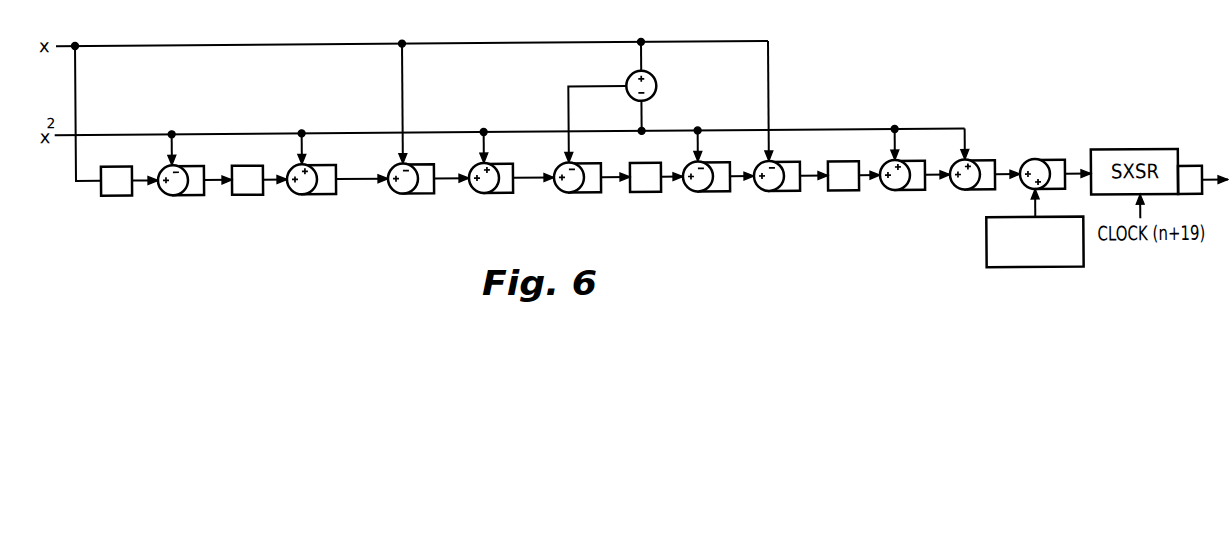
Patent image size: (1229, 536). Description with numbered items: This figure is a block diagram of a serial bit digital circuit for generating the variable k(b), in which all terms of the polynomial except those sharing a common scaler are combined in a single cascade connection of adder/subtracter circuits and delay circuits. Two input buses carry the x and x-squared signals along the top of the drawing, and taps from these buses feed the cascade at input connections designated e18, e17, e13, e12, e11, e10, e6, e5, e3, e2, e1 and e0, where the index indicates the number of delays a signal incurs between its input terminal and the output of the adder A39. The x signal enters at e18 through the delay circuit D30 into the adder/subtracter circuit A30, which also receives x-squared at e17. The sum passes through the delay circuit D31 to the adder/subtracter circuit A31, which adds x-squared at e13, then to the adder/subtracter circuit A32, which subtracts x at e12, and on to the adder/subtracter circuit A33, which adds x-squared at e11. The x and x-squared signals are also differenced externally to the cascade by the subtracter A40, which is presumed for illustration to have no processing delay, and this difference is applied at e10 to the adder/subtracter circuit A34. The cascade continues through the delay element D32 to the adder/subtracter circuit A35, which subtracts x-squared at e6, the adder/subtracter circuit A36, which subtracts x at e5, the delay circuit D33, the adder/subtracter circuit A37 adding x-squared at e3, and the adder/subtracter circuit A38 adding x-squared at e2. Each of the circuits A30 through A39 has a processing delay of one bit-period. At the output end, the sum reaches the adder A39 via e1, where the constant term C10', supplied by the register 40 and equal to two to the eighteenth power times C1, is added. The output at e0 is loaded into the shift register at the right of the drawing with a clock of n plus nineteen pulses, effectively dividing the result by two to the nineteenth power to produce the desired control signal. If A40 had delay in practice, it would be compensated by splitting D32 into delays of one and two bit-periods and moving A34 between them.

The delay circuit D30 is at (121, 196).
The adder/subtracter circuit A30 is at (184, 192).
The delay circuit D31 is at (252, 196).
The adder/subtracter circuit A31 is at (313, 192).
The adder/subtracter circuit A32 is at (414, 192).
The adder/subtracter circuit A33 is at (495, 192).
The adder/subtracter circuit A34 is at (580, 192).
The delay element D32 is at (650, 196).
The adder/subtracter circuit A35 is at (709, 192).
The adder/subtracter circuit A36 is at (780, 192).
The delay circuit D33 is at (848, 196).
The adder/subtracter circuit A37 is at (906, 192).
The adder/subtracter circuit A38 is at (976, 192).
The adder A39 is at (1045, 169).
The subtracter A40 is at (657, 92).
The register 40 is at (986, 258).
The input connection e18 is at (76, 162).
The input connection e17 is at (174, 152).
The input connection e13 is at (304, 152).
The input connection e12 is at (405, 152).
The input connection e11 is at (486, 152).
The input connection e10 is at (570, 147).
The input connection e6 is at (700, 152).
The input connection e5 is at (771, 152).
The input connection e3 is at (893, 147).
The input connection e2 is at (961, 147).
The input connection e1 is at (1001, 180).
The output connection e0 is at (1073, 180).